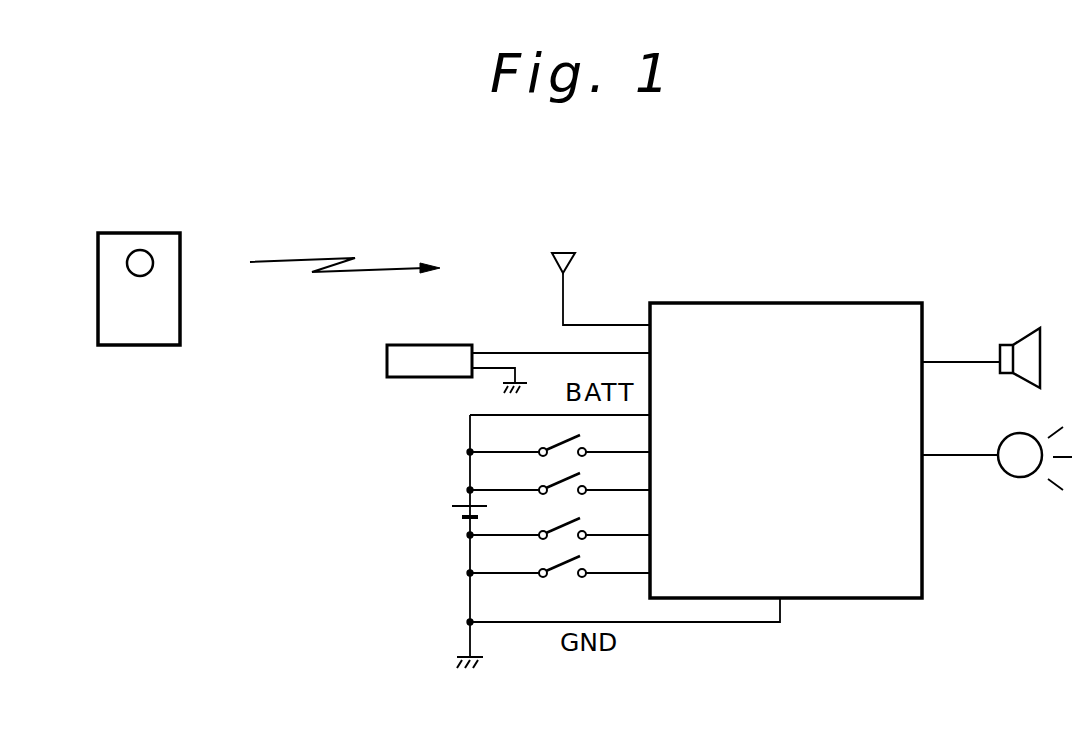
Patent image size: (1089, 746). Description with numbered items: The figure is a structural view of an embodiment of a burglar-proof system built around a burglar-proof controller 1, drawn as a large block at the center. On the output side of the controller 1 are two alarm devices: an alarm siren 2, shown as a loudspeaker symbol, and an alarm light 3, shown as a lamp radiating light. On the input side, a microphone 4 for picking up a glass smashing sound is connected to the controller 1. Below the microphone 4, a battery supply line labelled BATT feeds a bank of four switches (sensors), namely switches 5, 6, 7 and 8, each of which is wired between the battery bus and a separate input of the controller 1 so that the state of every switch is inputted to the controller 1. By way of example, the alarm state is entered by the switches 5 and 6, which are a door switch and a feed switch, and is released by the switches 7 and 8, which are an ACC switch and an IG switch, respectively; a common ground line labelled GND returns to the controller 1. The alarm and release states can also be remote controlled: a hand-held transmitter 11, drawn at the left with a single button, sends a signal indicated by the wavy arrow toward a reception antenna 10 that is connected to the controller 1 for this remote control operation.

The burglar-proof controller 1 is at (806, 303).
The alarm siren 2 is at (1000, 352).
The alarm light 3 is at (1004, 440).
The microphone 4 is at (387, 362).
The switch 5 is at (555, 443).
The switch 6 is at (555, 481).
The switch 7 is at (555, 525).
The switch 8 is at (555, 563).
The reception antenna 10 is at (577, 257).
The transmitter 11 is at (98, 273).